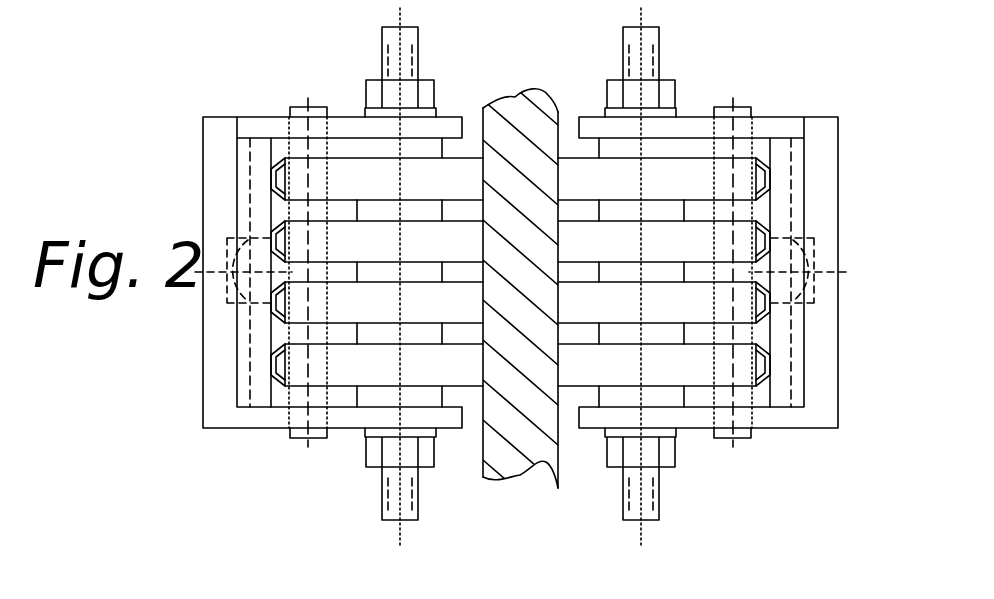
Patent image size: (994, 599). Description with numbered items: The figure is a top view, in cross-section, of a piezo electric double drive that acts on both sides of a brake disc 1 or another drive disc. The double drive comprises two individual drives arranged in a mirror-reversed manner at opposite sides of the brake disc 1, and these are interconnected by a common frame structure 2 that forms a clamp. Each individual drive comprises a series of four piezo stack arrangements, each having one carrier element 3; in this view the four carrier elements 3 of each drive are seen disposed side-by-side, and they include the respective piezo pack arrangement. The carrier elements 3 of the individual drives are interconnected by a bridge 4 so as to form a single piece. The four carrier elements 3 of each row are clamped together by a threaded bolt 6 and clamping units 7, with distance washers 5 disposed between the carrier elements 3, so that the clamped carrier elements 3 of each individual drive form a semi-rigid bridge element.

The brake disc 1 is at (535, 118).
The frame structure 2 is at (218, 143).
The carrier element 3 is at (422, 300).
The bridge 4 is at (762, 320).
The distance washer 5 is at (372, 208).
The threaded bolt 6 is at (408, 47).
The clamping unit 7 is at (425, 93).